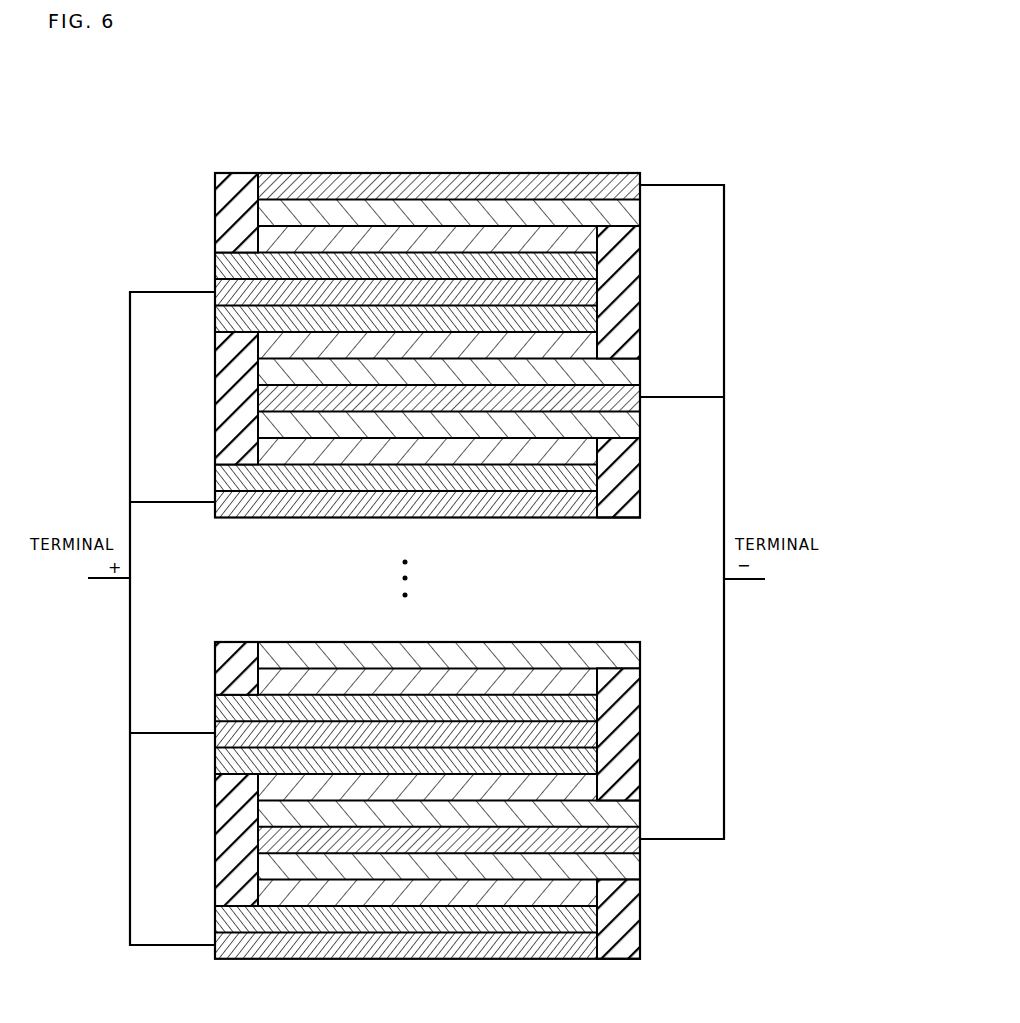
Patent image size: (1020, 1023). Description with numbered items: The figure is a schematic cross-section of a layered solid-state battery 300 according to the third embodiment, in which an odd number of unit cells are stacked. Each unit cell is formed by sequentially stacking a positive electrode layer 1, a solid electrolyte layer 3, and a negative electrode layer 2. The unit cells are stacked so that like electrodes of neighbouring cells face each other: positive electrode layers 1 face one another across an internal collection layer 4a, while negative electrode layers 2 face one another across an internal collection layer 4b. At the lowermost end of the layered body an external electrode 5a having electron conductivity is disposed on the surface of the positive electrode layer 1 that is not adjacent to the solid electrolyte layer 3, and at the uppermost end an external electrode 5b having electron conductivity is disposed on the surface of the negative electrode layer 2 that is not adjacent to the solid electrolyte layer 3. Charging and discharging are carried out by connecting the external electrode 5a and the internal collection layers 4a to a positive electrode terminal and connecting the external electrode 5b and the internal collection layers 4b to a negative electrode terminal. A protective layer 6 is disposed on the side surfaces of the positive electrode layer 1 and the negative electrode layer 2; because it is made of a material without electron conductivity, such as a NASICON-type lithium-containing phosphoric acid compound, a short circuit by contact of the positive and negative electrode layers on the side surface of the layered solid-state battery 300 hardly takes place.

The layered solid-state battery 300 is at (510, 146).
The positive electrode layer 1 is at (238, 266).
The negative electrode layer 2 is at (272, 213).
The solid electrolyte layer 3 is at (272, 240).
The internal collection layer 4a is at (240, 292).
The internal collection layer 4b is at (262, 420).
The external electrode 5a is at (236, 960).
The external electrode 5b is at (273, 172).
The protective layer 6 is at (236, 190).